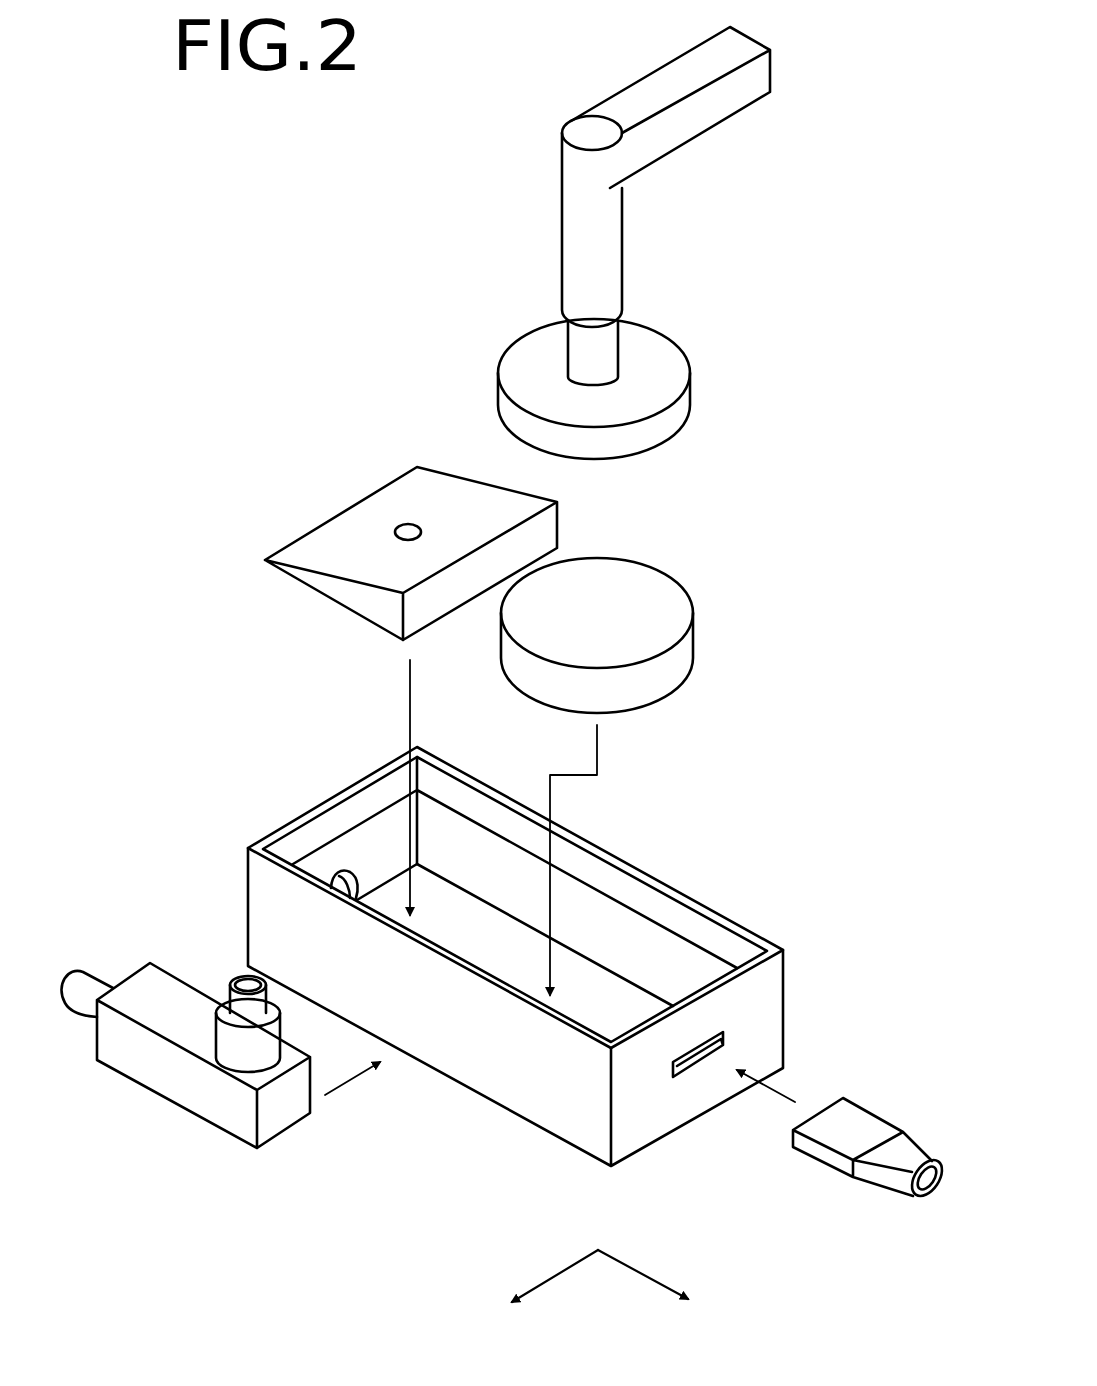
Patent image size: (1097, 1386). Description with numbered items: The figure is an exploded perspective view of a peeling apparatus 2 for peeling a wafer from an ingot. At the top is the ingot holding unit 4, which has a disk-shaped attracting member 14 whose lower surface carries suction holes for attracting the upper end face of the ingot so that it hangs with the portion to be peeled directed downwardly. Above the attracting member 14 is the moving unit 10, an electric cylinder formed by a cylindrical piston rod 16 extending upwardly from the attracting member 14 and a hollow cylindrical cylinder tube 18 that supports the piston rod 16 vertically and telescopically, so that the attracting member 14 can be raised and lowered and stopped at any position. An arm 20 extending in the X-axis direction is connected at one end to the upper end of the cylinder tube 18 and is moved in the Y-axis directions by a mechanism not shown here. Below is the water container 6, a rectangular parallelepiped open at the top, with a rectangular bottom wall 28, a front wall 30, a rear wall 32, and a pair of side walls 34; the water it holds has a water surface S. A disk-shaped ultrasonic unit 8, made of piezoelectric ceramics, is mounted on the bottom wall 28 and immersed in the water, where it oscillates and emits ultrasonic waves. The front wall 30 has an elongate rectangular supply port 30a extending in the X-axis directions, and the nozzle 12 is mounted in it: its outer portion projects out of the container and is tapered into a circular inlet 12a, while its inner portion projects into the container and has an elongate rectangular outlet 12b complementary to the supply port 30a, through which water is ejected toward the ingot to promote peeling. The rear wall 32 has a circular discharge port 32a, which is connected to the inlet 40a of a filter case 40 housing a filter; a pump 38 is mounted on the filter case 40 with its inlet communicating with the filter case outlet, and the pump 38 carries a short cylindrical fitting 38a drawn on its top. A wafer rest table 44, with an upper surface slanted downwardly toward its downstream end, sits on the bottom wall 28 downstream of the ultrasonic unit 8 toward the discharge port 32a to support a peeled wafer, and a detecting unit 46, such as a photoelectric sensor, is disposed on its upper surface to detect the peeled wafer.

The peeling apparatus 2 is at (257, 470).
The ingot holding unit 4 is at (668, 362).
The water container 6 is at (792, 980).
The ultrasonic unit 8 is at (638, 583).
The moving unit 10 is at (716, 214).
The nozzle 12 is at (868, 1155).
The inlet 12a is at (937, 1193).
The outlet 12b is at (820, 1103).
The attracting member 14 is at (678, 405).
The piston rod 16 is at (605, 342).
The cylinder tube 18 is at (603, 228).
The arm 20 is at (732, 50).
The bottom wall 28 is at (637, 1008).
The front wall 30 is at (762, 1050).
The supply port 30a is at (683, 1067).
The rear wall 32 is at (327, 808).
The discharge port 32a is at (340, 877).
The side walls 34 is at (265, 885).
The pump 38 is at (235, 1037).
The pump outlet 38a is at (243, 973).
The filter case 40 is at (183, 1024).
The inlet 40a is at (97, 984).
The wafer rest table 44 is at (398, 552).
The detecting unit 46 is at (400, 522).
The water surface S is at (398, 795).